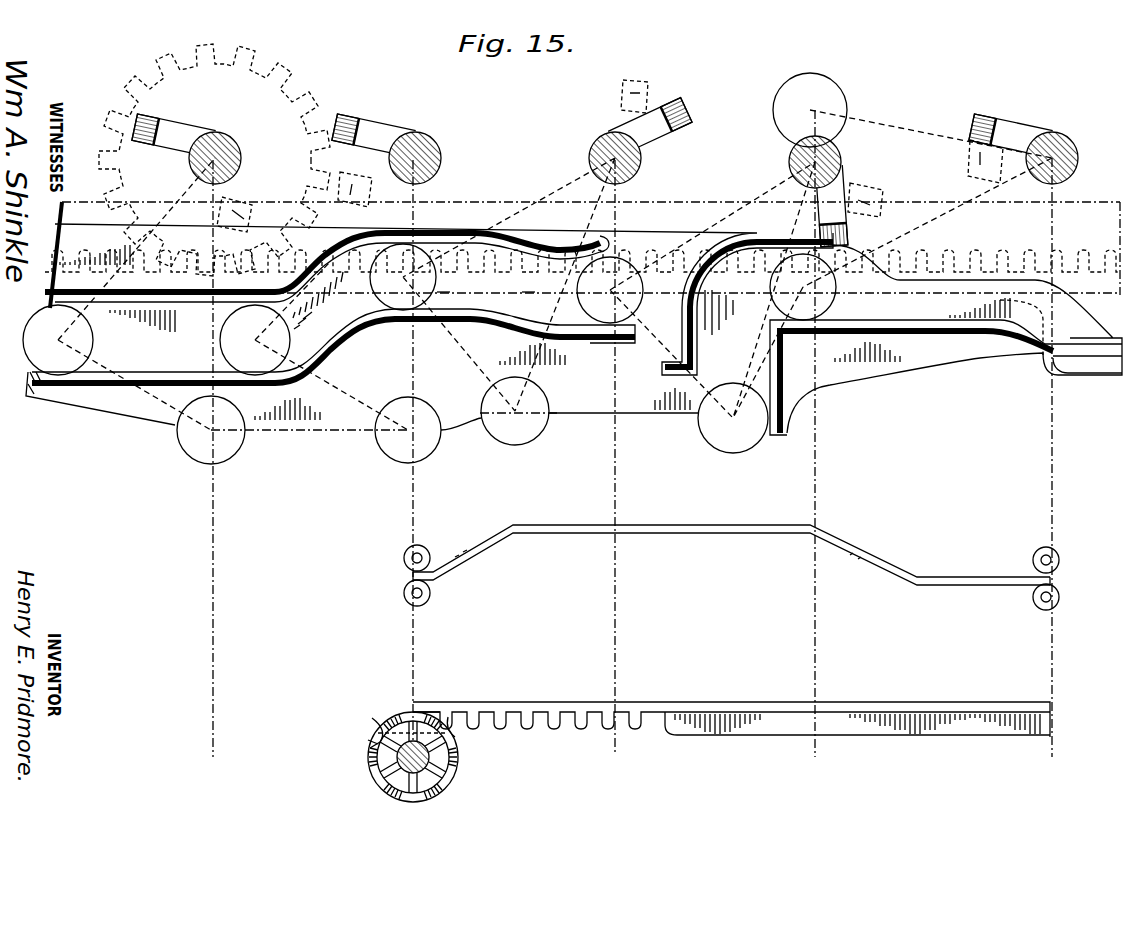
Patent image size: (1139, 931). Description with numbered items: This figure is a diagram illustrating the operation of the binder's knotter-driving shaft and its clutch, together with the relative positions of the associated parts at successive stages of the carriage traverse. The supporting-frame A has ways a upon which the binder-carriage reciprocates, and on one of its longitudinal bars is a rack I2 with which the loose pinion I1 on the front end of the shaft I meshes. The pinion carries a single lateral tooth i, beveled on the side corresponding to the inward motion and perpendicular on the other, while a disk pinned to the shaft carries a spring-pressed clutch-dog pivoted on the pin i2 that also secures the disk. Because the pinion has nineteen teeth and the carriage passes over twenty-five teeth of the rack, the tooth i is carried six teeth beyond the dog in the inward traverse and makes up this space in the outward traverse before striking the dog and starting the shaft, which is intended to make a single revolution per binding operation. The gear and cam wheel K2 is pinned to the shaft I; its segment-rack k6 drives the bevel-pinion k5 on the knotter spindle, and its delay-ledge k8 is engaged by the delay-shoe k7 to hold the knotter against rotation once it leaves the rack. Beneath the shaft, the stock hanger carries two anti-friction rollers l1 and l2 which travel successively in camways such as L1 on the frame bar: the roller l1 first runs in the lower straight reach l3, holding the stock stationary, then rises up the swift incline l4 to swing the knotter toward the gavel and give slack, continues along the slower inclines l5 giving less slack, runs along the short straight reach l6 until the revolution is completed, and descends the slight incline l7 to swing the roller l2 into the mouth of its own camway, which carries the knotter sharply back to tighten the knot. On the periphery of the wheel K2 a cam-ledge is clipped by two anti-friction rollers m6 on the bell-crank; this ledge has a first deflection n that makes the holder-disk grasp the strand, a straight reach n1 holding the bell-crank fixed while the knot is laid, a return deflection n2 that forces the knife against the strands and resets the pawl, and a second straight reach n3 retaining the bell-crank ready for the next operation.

The loose pinion I1 is at (288, 90).
The shaft I is at (1078, 160).
The pin i2 is at (1010, 128).
The lateral tooth i is at (969, 166).
The ways a is at (636, 233).
The anti-friction roller l1 is at (537, 251).
The anti-friction roller l2 is at (506, 359).
The lower straight reach l3 is at (142, 331).
The swift incline l4 is at (303, 329).
The slower inclines l5 is at (322, 295).
The short straight reach l6 is at (449, 289).
The slight incline l7 is at (534, 299).
The supporting-frame A is at (574, 339).
The camway L1 is at (698, 362).
The rack I2 is at (1078, 266).
The gear and cam wheel K2 is at (717, 708).
The deflection n is at (470, 552).
The straight reach n1 is at (731, 547).
The return deflection n2 is at (850, 550).
The second straight reach n3 is at (412, 578).
The anti-friction rollers m6 is at (1034, 596).
The bevel-pinion k5 is at (458, 768).
The segment-rack k6 is at (539, 730).
The delay-shoe k7 is at (372, 718).
The delay-ledge k8 is at (741, 749).